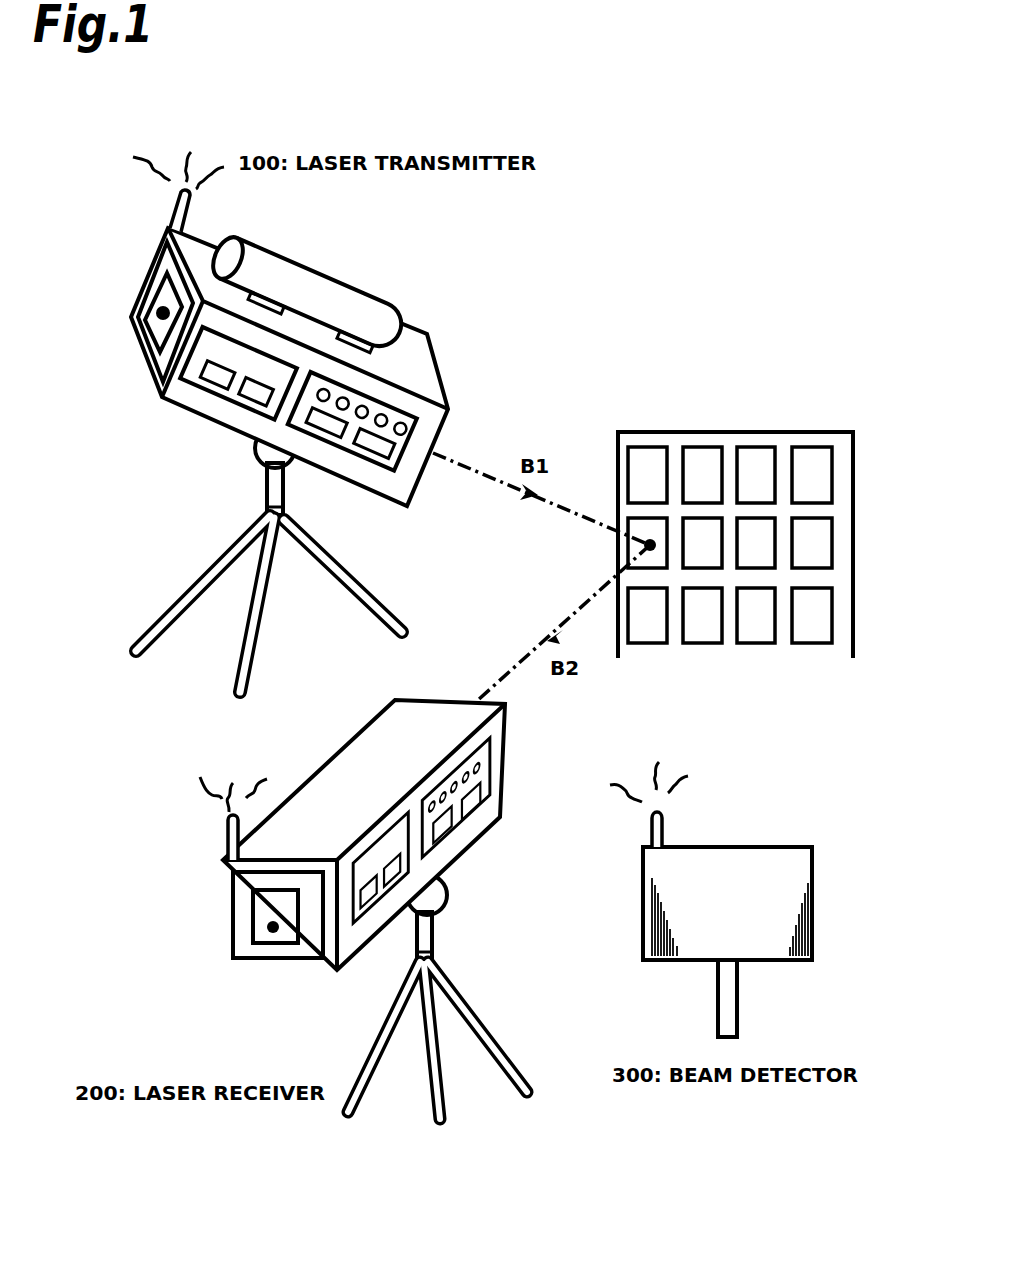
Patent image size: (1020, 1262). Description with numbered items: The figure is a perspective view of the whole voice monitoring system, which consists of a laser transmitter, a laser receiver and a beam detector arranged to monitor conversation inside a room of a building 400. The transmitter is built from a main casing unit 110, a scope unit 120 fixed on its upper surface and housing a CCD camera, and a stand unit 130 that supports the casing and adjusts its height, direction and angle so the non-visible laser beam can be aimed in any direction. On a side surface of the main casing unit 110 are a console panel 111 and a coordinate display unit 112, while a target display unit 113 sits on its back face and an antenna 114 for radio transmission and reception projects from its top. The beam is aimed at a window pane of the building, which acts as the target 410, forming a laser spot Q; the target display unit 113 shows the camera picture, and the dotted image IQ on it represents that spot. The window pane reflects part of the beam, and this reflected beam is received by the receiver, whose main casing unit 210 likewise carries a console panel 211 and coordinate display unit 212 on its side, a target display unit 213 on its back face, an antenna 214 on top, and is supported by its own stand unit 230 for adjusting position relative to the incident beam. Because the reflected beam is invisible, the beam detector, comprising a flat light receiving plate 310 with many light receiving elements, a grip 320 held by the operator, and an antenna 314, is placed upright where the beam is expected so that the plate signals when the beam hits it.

The main casing unit 110 is at (183, 400).
The console panel 111 is at (368, 395).
The coordinate display unit 112 is at (247, 402).
The target display unit 113 is at (160, 277).
The antenna 114 is at (180, 208).
The scope unit 120 is at (350, 300).
The stand unit 130 is at (283, 492).
The main casing unit 210 is at (355, 758).
The console panel 211 is at (478, 808).
The coordinate display unit 212 is at (373, 907).
The target display unit 213 is at (243, 908).
The antenna 214 is at (230, 838).
The stand unit 230 is at (427, 928).
The light receiving plate 310 is at (715, 858).
The antenna 314 is at (650, 831).
The grip 320 is at (728, 998).
The building 400 is at (748, 438).
The target 410 is at (645, 523).
The laser spot Q is at (645, 547).
The dotted image IQ is at (161, 320).